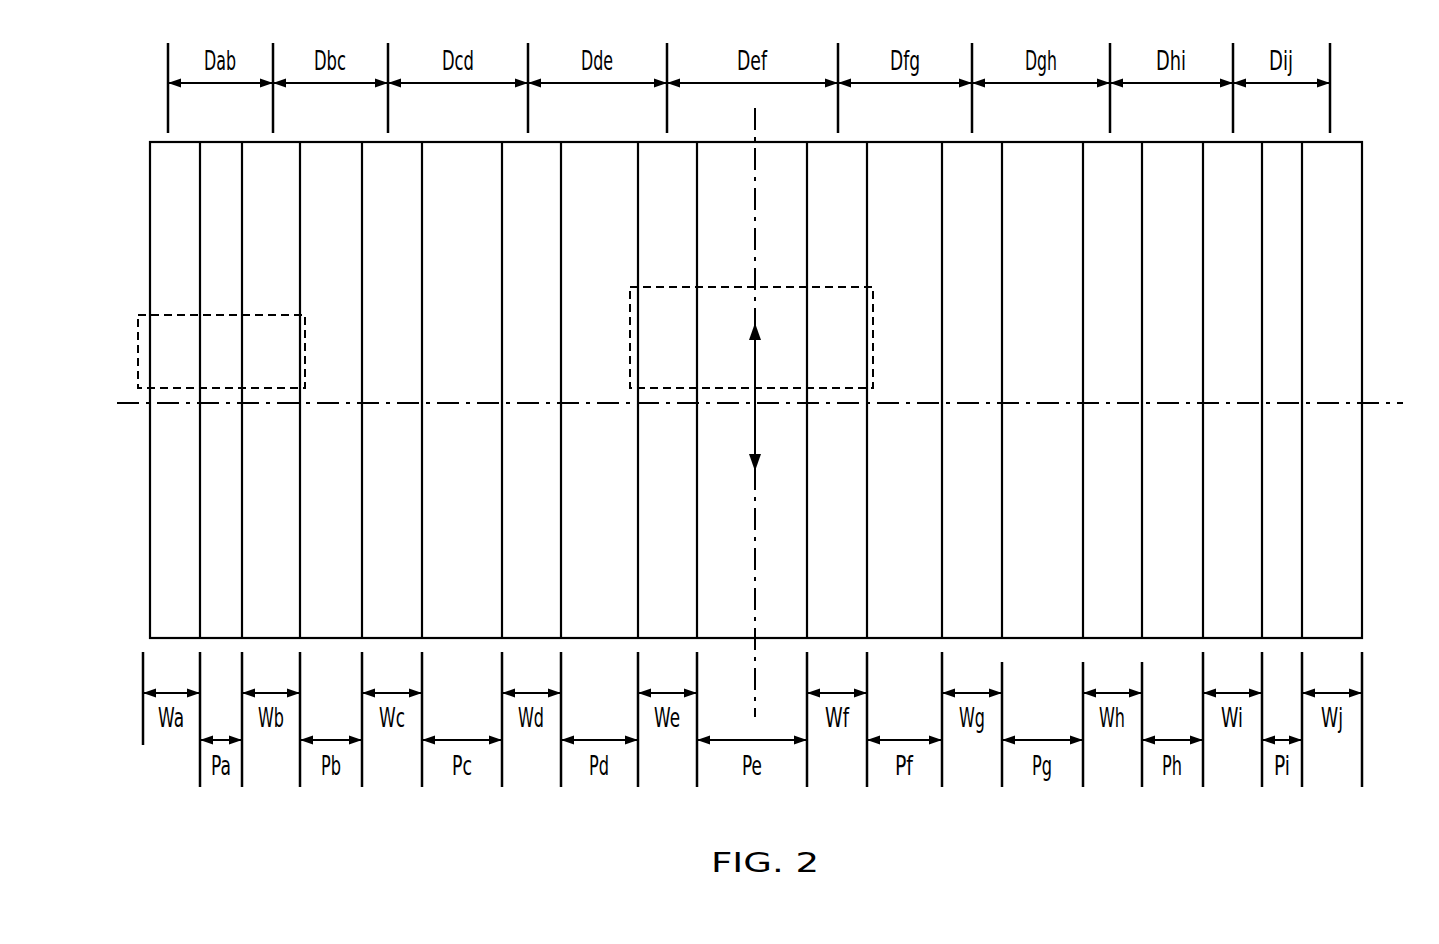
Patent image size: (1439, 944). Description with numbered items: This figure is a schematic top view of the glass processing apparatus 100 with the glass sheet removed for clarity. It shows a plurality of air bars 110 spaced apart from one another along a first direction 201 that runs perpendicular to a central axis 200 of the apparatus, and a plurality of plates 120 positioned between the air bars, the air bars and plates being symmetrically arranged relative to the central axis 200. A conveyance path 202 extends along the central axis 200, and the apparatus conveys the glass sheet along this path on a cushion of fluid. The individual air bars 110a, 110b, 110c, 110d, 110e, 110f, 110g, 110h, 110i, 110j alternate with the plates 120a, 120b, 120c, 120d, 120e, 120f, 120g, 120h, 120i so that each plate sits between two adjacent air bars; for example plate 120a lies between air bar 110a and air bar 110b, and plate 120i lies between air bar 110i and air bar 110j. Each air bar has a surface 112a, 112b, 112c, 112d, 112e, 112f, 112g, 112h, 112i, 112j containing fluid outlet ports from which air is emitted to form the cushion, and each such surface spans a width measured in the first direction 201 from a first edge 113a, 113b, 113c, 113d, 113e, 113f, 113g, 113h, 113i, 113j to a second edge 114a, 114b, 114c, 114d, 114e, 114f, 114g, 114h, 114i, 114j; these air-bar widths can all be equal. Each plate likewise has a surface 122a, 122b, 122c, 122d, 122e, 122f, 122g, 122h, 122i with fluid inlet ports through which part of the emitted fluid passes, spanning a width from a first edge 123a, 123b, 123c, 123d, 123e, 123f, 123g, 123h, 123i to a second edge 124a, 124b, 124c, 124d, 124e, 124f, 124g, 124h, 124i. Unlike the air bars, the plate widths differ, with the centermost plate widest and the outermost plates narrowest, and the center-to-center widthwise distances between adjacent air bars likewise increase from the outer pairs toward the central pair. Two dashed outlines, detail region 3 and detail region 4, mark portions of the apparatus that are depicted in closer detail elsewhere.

The glass processing apparatus 100 is at (125, 137).
The plurality of air bars 110 is at (131, 323).
The plurality of plates 120 is at (131, 267).
The region of FIG. 3 is at (873, 345).
The region of FIG. 4 is at (305, 337).
The central axis 200 is at (748, 621).
The first direction 201 is at (1398, 408).
The conveyance path 202 is at (755, 458).
The air bar 110a is at (160, 460).
The air bar 110b is at (250, 454).
The air bar 110c is at (385, 452).
The air bar 110d is at (522, 455).
The air bar 110e is at (648, 460).
The air bar 110f is at (832, 457).
The air bar 110g is at (960, 458).
The air bar 110h is at (1093, 455).
The air bar 110i is at (1215, 458).
The air bar 110j is at (1320, 450).
The surface 112a is at (177, 618).
The surface 112b is at (277, 618).
The surface 112c is at (398, 618).
The surface 112d is at (537, 618).
The surface 112e is at (673, 618).
The surface 112f is at (843, 618).
The surface 112g is at (978, 618).
The surface 112h is at (1118, 618).
The surface 112i is at (1238, 618).
The surface 112j is at (1338, 618).
The first edge 113a is at (150, 556).
The first edge 113b is at (242, 573).
The first edge 113c is at (362, 598).
The first edge 113d is at (502, 595).
The first edge 113e is at (638, 590).
The first edge 113f is at (807, 600).
The first edge 113g is at (942, 595).
The first edge 113h is at (1083, 590).
The first edge 113i is at (1203, 600).
The first edge 113j is at (1302, 590).
The second edge 114a is at (200, 512).
The second edge 114b is at (300, 508).
The second edge 114c is at (422, 508).
The second edge 114d is at (561, 510).
The second edge 114e is at (697, 520).
The second edge 114f is at (867, 520).
The second edge 114g is at (1002, 520).
The second edge 114h is at (1142, 510).
The second edge 114i is at (1262, 520).
The second edge 114j is at (1362, 522).
The plate 120a is at (233, 153).
The plate 120b is at (351, 153).
The plate 120c is at (487, 153).
The plate 120d is at (613, 153).
The plate 120e is at (785, 153).
The plate 120f is at (918, 153).
The plate 120g is at (1051, 153).
The plate 120h is at (1178, 153).
The plate 120i is at (1288, 153).
The surface 122a is at (217, 153).
The surface 122b is at (334, 153).
The surface 122c is at (463, 153).
The surface 122d is at (586, 153).
The surface 122e is at (731, 153).
The surface 122f is at (894, 153).
The surface 122g is at (1021, 153).
The surface 122h is at (1161, 153).
The surface 122i is at (1273, 153).
The first edge 123a is at (200, 267).
The first edge 123b is at (300, 288).
The first edge 123c is at (422, 315).
The first edge 123d is at (561, 203).
The first edge 123e is at (697, 265).
The first edge 123f is at (867, 275).
The first edge 123g is at (1002, 298).
The first edge 123h is at (1142, 312).
The first edge 123i is at (1262, 340).
The second edge 124a is at (242, 215).
The second edge 124b is at (362, 220).
The second edge 124c is at (502, 235).
The second edge 124d is at (638, 215).
The second edge 124e is at (807, 220).
The second edge 124f is at (942, 228).
The second edge 124g is at (1083, 248).
The second edge 124h is at (1203, 245).
The second edge 124i is at (1302, 218).